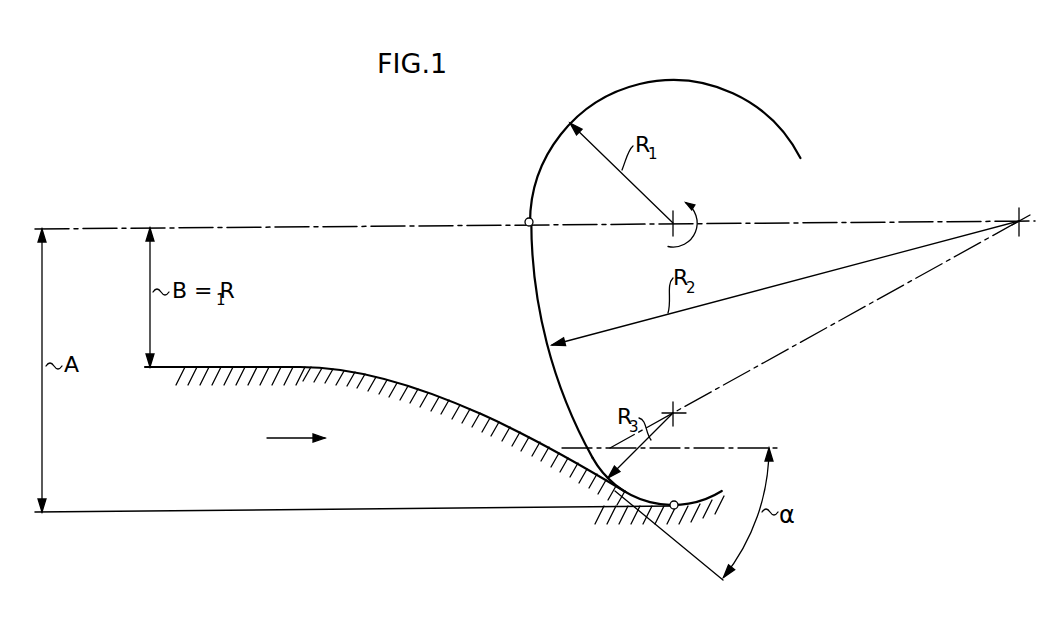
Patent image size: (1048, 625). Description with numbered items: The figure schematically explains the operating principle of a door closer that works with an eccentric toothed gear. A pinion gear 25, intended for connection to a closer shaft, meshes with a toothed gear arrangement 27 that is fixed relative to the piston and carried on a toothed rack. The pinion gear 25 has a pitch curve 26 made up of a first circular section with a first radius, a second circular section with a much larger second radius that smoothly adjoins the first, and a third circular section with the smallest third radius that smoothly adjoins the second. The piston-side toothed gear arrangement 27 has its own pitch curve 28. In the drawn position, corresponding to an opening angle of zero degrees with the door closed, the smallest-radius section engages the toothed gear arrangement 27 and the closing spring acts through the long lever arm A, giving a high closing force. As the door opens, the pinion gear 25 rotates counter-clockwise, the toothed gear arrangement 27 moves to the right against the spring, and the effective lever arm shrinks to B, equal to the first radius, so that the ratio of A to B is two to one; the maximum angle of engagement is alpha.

The pinion gear 25 is at (665, 288).
The pitch curve 26 is at (595, 103).
The toothed gear arrangement 27 is at (400, 385).
The pitch curve 28 is at (268, 366).